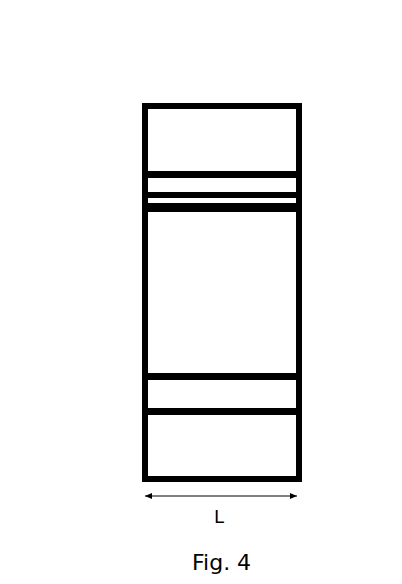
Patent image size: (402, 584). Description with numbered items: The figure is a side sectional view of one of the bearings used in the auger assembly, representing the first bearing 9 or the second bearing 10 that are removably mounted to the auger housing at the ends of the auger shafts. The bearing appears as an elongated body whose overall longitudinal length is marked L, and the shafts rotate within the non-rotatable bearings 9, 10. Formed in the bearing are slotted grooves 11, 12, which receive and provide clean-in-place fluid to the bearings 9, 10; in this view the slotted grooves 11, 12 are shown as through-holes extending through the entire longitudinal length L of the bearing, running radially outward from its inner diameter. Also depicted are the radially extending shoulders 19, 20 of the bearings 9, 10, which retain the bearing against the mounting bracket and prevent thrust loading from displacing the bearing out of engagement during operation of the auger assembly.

The first bearing 9 is at (159, 269).
The second bearing 10 is at (122, 133).
The radially extending shoulder 19 is at (201, 107).
The radially extending shoulder 20 is at (255, 171).
The slotted groove 11 is at (167, 223).
The slotted groove 12 is at (273, 197).